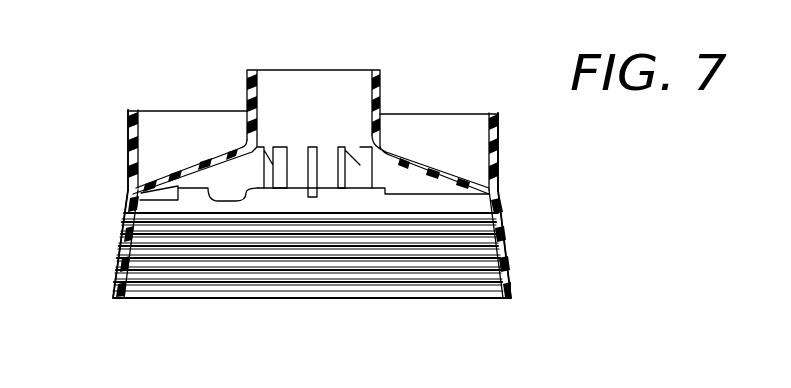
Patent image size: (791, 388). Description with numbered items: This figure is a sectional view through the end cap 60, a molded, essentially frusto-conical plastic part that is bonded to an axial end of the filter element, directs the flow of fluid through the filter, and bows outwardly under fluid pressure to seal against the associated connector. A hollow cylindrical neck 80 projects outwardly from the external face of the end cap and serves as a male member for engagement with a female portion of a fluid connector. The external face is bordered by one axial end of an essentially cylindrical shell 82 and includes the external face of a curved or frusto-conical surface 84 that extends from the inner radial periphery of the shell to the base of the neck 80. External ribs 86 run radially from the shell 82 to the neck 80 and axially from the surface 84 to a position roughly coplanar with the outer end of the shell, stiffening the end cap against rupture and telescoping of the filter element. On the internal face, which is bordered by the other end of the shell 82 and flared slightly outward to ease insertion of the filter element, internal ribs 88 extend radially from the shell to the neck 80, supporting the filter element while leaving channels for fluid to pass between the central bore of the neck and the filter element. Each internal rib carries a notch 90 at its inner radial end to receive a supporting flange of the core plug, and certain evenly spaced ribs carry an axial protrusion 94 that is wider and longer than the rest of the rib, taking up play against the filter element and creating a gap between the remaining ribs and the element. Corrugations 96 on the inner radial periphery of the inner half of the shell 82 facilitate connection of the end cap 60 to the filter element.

The end cap 60 is at (108, 123).
The hollow cylindrical neck 80 is at (385, 103).
The cylindrical shell 82 is at (127, 152).
The frusto-conical surface 84 is at (493, 141).
The external ribs 86 is at (150, 120).
The internal ribs 88 is at (203, 180).
The notch 90 is at (166, 139).
The axial protrusion 94 is at (134, 206).
The corrugations 96 is at (163, 285).